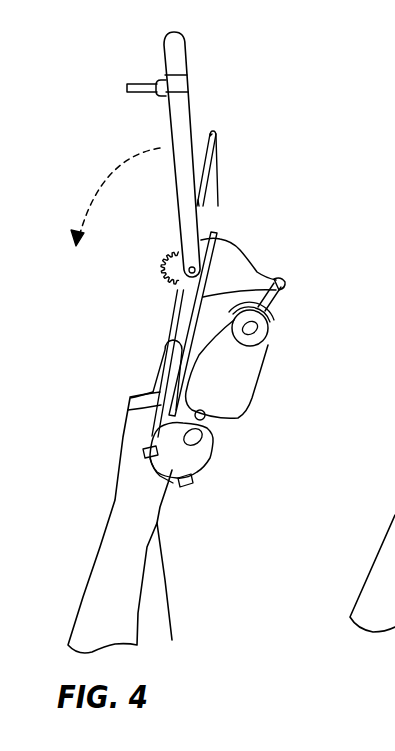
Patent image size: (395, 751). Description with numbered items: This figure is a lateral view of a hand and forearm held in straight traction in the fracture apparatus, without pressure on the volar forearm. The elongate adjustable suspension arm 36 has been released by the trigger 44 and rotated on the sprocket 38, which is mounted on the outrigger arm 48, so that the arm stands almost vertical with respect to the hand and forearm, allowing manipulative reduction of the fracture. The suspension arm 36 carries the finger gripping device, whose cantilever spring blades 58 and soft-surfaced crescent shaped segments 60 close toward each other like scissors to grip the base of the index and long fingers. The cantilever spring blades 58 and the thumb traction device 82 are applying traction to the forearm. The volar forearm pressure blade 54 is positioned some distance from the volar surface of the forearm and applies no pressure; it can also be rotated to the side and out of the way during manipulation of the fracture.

The elongate adjustable suspension arm 36 is at (170, 117).
The trigger 44 is at (138, 82).
The sprocket 38 is at (158, 278).
The cantilever spring blades 58 is at (163, 320).
The outrigger arm 48 is at (247, 260).
The thumb traction device 82 is at (287, 367).
The soft-surfaced crescent shaped segments 60 is at (130, 397).
The volar forearm pressure blade 54 is at (165, 595).